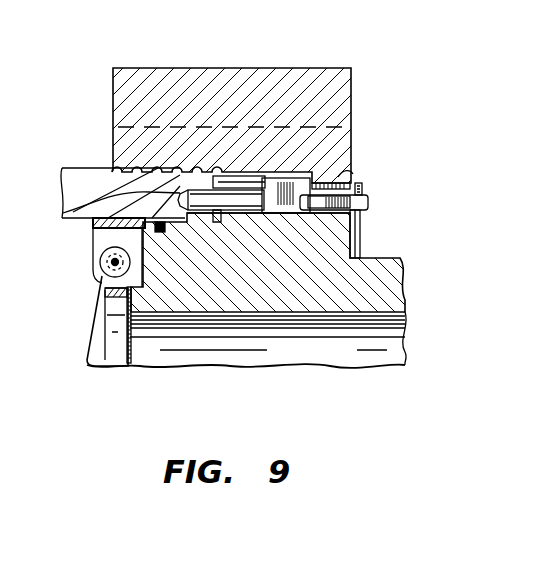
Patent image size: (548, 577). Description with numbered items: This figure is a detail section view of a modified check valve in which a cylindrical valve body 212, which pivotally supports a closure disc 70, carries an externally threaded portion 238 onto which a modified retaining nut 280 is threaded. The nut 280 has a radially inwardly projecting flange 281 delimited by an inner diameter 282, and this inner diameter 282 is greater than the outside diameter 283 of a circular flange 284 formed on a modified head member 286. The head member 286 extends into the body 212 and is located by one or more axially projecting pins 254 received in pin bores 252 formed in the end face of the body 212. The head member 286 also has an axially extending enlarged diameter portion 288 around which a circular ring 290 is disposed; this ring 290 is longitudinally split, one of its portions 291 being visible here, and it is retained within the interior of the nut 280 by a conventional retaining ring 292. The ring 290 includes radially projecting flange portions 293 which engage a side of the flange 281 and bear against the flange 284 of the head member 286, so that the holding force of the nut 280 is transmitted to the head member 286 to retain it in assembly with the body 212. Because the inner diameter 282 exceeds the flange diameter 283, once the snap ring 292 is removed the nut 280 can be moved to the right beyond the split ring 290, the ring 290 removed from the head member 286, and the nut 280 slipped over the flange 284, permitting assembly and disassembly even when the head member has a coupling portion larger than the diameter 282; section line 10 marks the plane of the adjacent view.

The section line 10- 10 is at (386, 25).
The closure disc 70 is at (87, 352).
The valve body 212 is at (75, 168).
The externally threaded portion 238 is at (133, 143).
The pin bore 252 is at (63, 207).
The axially projecting pin 254 is at (200, 195).
The retaining nut 280 is at (323, 172).
The radially inwardly projecting flange 281 is at (338, 178).
The inner diameter of the flange 282 is at (368, 208).
The outside diameter of the circular flange 283 is at (266, 185).
The circular flange 284 is at (233, 187).
The head member 286 is at (227, 300).
The enlarged diameter portion 288 is at (293, 212).
The circular ring 290 is at (312, 179).
The portion of the split ring 291 is at (318, 213).
The retaining ring 292 is at (363, 245).
The radially projecting flange portion 293 is at (290, 188).